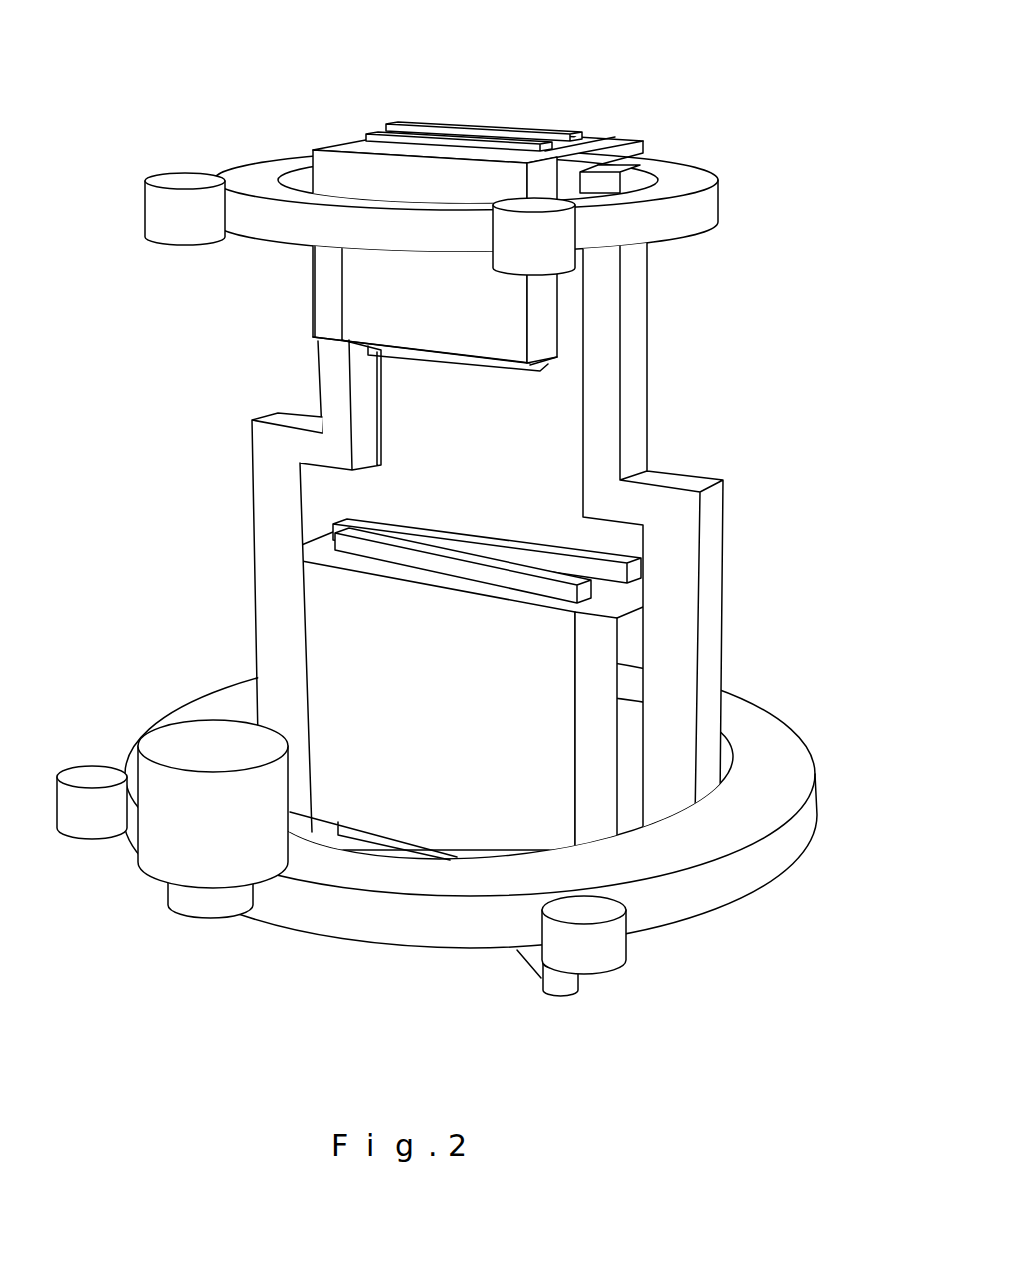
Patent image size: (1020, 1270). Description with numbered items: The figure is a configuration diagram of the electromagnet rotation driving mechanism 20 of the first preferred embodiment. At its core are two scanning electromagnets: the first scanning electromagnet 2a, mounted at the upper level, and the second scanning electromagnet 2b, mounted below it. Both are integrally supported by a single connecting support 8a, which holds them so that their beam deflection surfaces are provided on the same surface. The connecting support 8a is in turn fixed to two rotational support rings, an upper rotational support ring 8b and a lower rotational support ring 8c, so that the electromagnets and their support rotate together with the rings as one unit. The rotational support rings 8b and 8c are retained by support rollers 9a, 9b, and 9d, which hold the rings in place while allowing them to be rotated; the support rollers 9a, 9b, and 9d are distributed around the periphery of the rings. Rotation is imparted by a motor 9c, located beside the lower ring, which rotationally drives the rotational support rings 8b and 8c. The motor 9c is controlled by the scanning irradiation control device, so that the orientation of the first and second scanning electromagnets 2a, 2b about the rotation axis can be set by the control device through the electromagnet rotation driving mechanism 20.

The electromagnet rotation driving mechanism 20 is at (510, 98).
The first scanning electromagnet 2a is at (357, 165).
The second scanning electromagnet 2b is at (330, 617).
The connecting support 8a is at (252, 462).
The rotational support ring 8b is at (277, 245).
The rotational support ring 8c is at (333, 935).
The support roller 9a is at (146, 215).
The support roller 9b is at (630, 956).
The motor 9c is at (137, 866).
The support roller 9d is at (542, 994).